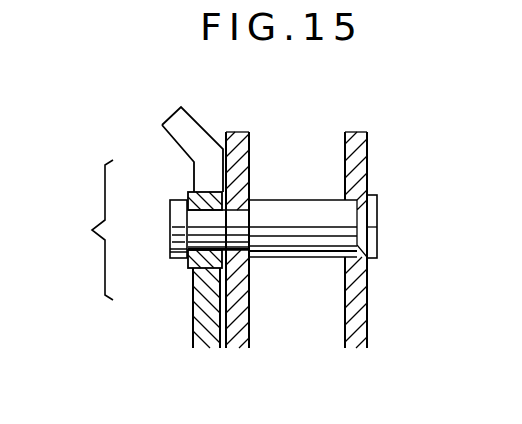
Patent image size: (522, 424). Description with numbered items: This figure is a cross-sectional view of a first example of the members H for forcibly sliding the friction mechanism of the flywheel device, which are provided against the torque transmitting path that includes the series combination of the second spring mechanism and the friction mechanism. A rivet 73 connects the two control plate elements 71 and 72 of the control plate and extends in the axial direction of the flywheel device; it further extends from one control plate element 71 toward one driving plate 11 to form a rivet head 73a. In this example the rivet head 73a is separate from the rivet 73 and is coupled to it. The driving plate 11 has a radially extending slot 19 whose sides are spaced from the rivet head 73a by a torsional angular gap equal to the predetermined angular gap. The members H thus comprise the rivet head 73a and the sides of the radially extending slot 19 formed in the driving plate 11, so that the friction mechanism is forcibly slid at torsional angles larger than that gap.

The driving plate 11 is at (200, 328).
The radially extending slot 19 is at (208, 178).
The control plate element 71 is at (237, 310).
The control plate element 72 is at (353, 320).
The rivet 73 is at (293, 212).
The rivet head 73a is at (193, 256).
The members for forcibly sliding the friction mechanism H is at (89, 230).